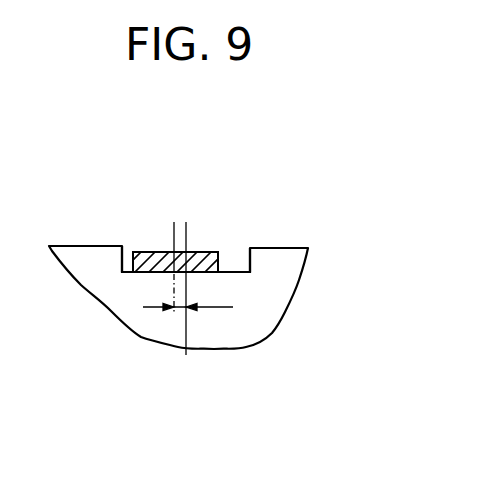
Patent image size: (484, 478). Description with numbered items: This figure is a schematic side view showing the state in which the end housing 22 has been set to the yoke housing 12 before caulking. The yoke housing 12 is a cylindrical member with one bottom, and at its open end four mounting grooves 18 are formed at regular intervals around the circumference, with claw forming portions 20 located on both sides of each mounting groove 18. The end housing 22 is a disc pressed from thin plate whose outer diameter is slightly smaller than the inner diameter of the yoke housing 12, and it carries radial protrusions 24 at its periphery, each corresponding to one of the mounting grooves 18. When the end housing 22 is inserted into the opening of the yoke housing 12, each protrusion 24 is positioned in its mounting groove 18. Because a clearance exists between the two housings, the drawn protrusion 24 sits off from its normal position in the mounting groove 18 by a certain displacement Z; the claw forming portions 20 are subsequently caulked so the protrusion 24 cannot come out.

The yoke housing 12 is at (67, 242).
The claw forming portions 20 is at (108, 245).
The protrusion 24 is at (155, 250).
The end housing 22 is at (175, 262).
The mounting groove 18 is at (229, 271).
The displacement Z is at (178, 315).